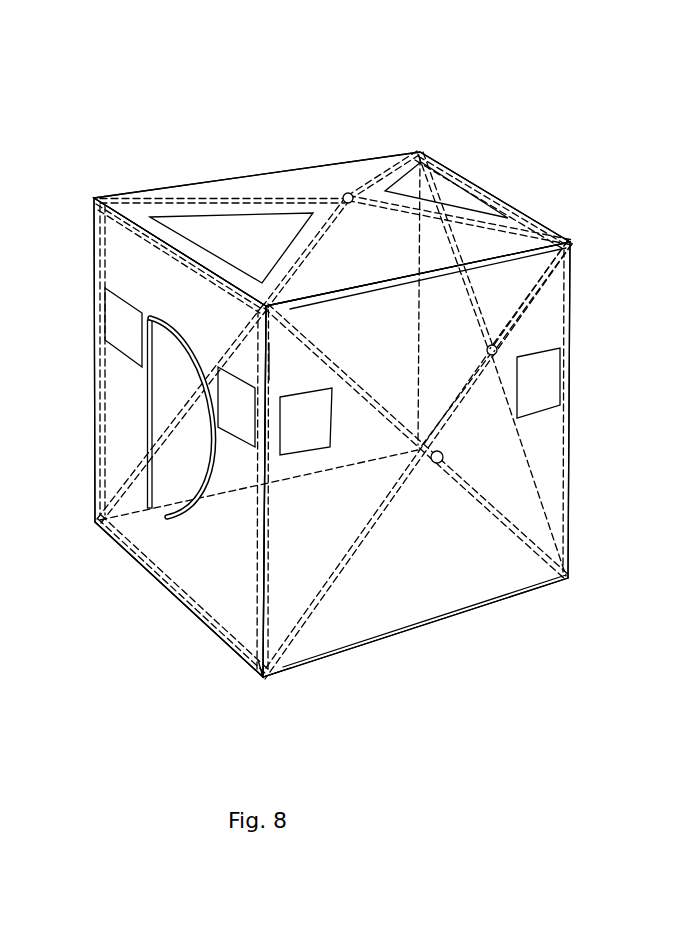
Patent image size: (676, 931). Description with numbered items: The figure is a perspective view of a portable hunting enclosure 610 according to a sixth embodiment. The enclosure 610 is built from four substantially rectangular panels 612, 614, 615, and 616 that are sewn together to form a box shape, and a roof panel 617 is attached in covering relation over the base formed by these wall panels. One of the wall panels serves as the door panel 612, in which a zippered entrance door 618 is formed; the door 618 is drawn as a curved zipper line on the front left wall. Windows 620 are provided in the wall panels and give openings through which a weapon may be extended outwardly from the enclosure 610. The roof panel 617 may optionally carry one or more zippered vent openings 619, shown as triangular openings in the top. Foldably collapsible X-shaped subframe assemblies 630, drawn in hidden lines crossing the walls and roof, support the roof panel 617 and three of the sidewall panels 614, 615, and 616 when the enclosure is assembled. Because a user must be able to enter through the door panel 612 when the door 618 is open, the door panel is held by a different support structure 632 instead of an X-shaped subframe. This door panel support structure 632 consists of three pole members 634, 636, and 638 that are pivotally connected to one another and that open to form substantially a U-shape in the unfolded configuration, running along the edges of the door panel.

The enclosure 610 is at (314, 364).
The door panel 612 is at (238, 623).
The panel 614 is at (432, 599).
The panel 615 is at (522, 218).
The panel 616 is at (274, 178).
The roof panel 617 is at (342, 186).
The zippered entrance door 618 is at (150, 493).
The zippered vent opening 619 is at (452, 196).
The window 620 is at (545, 385).
The X-shaped subframe assembly 630 is at (548, 311).
The door panel support structure 632 is at (128, 573).
The pole member 634 is at (283, 681).
The pole member 636 is at (196, 614).
The pole member 638 is at (96, 462).